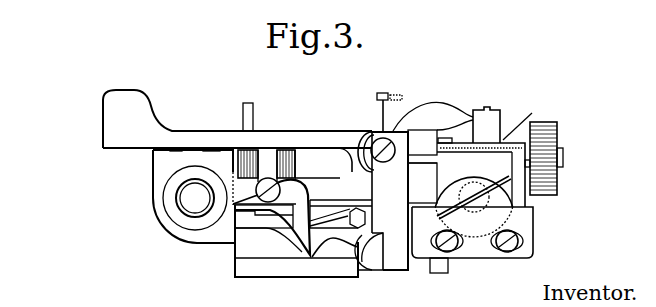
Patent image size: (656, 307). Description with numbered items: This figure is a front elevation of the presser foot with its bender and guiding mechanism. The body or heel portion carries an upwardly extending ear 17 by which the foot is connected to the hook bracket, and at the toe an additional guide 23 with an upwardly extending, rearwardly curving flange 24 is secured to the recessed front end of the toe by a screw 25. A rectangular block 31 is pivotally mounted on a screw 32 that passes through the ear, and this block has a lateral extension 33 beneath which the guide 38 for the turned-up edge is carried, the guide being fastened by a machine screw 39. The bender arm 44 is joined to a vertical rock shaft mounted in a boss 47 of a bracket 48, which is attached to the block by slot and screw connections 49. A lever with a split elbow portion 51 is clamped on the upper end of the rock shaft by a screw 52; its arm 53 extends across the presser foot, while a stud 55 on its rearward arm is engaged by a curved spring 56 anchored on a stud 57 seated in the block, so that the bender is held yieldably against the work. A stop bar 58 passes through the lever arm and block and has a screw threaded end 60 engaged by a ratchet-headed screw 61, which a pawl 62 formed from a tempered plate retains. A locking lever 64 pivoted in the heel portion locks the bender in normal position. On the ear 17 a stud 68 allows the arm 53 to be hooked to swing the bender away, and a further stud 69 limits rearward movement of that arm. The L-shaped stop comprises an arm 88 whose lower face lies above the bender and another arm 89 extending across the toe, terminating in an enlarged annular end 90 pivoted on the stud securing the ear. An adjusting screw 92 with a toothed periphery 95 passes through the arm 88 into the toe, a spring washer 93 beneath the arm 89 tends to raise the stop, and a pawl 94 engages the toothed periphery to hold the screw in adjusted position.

The arm 53 is at (112, 118).
The ear 17 is at (160, 158).
The enlarged annular end 90 is at (173, 192).
The stud 68 is at (172, 148).
The stud 69 is at (215, 148).
The pawl 94 is at (263, 155).
The adjusting screw 92 is at (290, 148).
The toothed periphery 95 is at (295, 152).
The spring washer 93 is at (247, 191).
The arm 88 is at (310, 203).
The screw 25 is at (250, 223).
The guide 23 is at (307, 247).
The flange 24 is at (333, 248).
The bender arm 44 is at (375, 262).
The guide 38 is at (388, 268).
The split elbow portion 51 is at (393, 138).
The screw 52 is at (372, 143).
The stud 55 is at (383, 93).
The curved spring 56 is at (423, 103).
The bar 58 is at (422, 153).
The lateral extension 33 is at (418, 195).
The stud 57 is at (485, 108).
The rectangular block 31 is at (510, 140).
The pawl 62 is at (522, 115).
The screw 32 is at (515, 200).
The bracket 48 is at (527, 222).
The slot and screw connections 49 is at (502, 251).
The boss 47 is at (418, 250).
The screw 61 is at (556, 130).
The screw threaded end 60 is at (563, 152).
The locking lever 64 is at (337, 200).
The machine screw 39 is at (355, 210).
The arm 89 is at (203, 243).